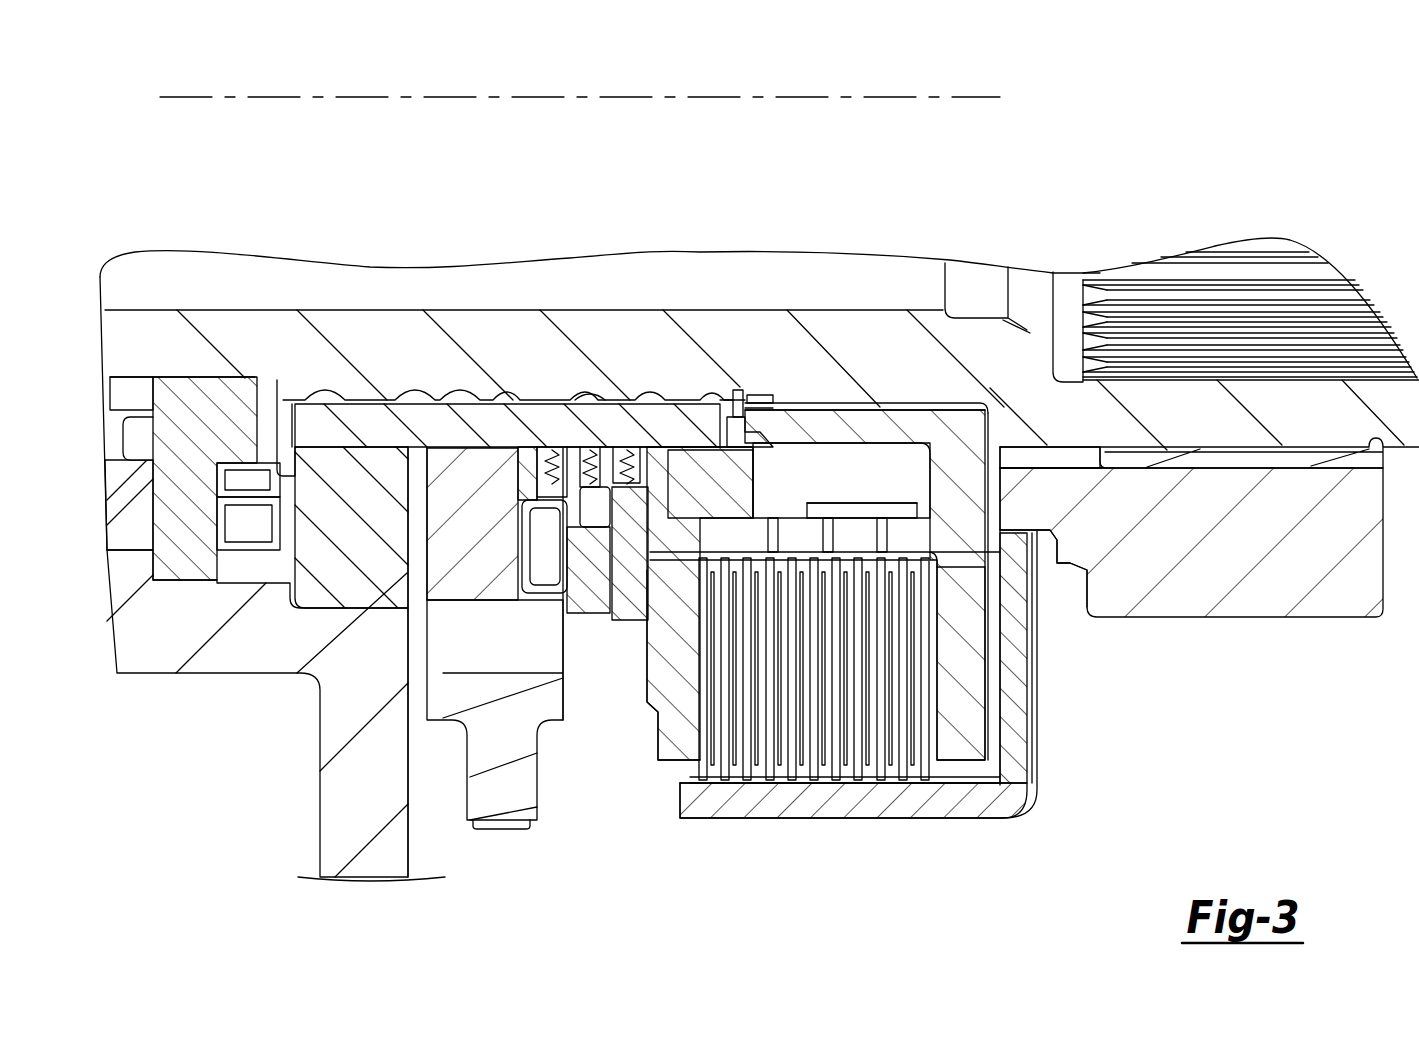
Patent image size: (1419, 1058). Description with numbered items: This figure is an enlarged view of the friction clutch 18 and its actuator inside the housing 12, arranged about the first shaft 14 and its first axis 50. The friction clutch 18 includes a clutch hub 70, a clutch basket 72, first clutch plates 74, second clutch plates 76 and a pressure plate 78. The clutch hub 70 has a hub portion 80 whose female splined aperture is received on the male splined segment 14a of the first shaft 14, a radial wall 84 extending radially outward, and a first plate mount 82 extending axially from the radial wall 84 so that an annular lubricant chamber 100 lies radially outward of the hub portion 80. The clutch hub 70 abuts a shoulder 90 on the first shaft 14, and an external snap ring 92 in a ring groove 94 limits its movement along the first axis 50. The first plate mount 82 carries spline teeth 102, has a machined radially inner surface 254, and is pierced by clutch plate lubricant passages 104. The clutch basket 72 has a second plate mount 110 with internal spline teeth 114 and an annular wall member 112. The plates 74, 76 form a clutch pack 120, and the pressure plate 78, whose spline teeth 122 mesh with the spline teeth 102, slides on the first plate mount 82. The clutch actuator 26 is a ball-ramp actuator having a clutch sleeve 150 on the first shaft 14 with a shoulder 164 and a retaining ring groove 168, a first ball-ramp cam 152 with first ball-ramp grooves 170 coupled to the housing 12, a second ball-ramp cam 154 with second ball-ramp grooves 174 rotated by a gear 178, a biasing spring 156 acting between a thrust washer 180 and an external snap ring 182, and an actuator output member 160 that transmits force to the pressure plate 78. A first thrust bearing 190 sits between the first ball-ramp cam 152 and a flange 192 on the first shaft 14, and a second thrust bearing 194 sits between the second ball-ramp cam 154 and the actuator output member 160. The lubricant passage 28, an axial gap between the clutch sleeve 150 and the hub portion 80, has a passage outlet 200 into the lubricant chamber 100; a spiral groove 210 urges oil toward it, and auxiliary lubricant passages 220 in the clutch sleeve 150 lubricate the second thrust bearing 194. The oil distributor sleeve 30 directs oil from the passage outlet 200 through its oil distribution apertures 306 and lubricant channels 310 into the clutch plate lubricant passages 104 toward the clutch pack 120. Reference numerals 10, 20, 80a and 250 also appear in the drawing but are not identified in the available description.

The driveline assembly 10 is at (1168, 172).
The housing 12 is at (135, 643).
The first shaft 14 is at (130, 322).
The male splined segment 14a is at (830, 405).
The friction clutch 18 is at (1065, 752).
The output shaft 20 is at (1315, 598).
The clutch actuator 26 is at (410, 673).
The lubricant passage 28 is at (727, 430).
The oil distributor sleeve 30 is at (893, 400).
The first axis 50 is at (915, 97).
The clutch hub 70 is at (930, 525).
The clutch basket 72 is at (1005, 808).
The first clutch plates 74 is at (882, 775).
The second clutch plates 76 is at (852, 775).
The pressure plate 78 is at (667, 730).
The hub portion 80 is at (900, 432).
The cover member flange 80a is at (1040, 413).
The first plate mount 82 is at (698, 537).
The radial wall 84 is at (964, 660).
The shoulder 90 is at (1040, 333).
The external snap ring 92 is at (747, 398).
The ring groove 94 is at (740, 393).
The lubricant chamber 100 is at (807, 475).
The spline teeth 102 is at (783, 560).
The clutch plate lubricant passages 104 is at (827, 543).
The second plate mount 110 is at (930, 810).
The annular wall member 112 is at (1010, 694).
The spline teeth 114 is at (695, 783).
The clutch pack 120 is at (787, 733).
The spline teeth 122 is at (635, 570).
The clutch sleeve 150 is at (343, 417).
The first ball-ramp cam 152 is at (312, 567).
The second ball-ramp cam 154 is at (468, 573).
The biasing spring 156 is at (594, 400).
The actuator output member 160 is at (585, 612).
The shoulder 164 is at (292, 437).
The retaining ring groove 168 is at (640, 485).
The first ball-ramp grooves 170 is at (412, 548).
The second ball-ramp grooves 174 is at (447, 523).
The gear 178 is at (485, 830).
The thrust washer 180 is at (540, 515).
The external snap ring 182 is at (613, 560).
The first thrust bearing 190 is at (238, 547).
The flange 192 is at (185, 403).
The second thrust bearing 194 is at (533, 543).
The passage outlet 200 is at (798, 405).
The spiral groove 210 is at (425, 397).
The auxiliary lubricant passages 220 is at (552, 447).
The apply member 250 is at (845, 493).
The radially inner surface 254 is at (880, 470).
The oil distribution apertures 306 is at (733, 430).
The lubricant channels 310 is at (767, 512).